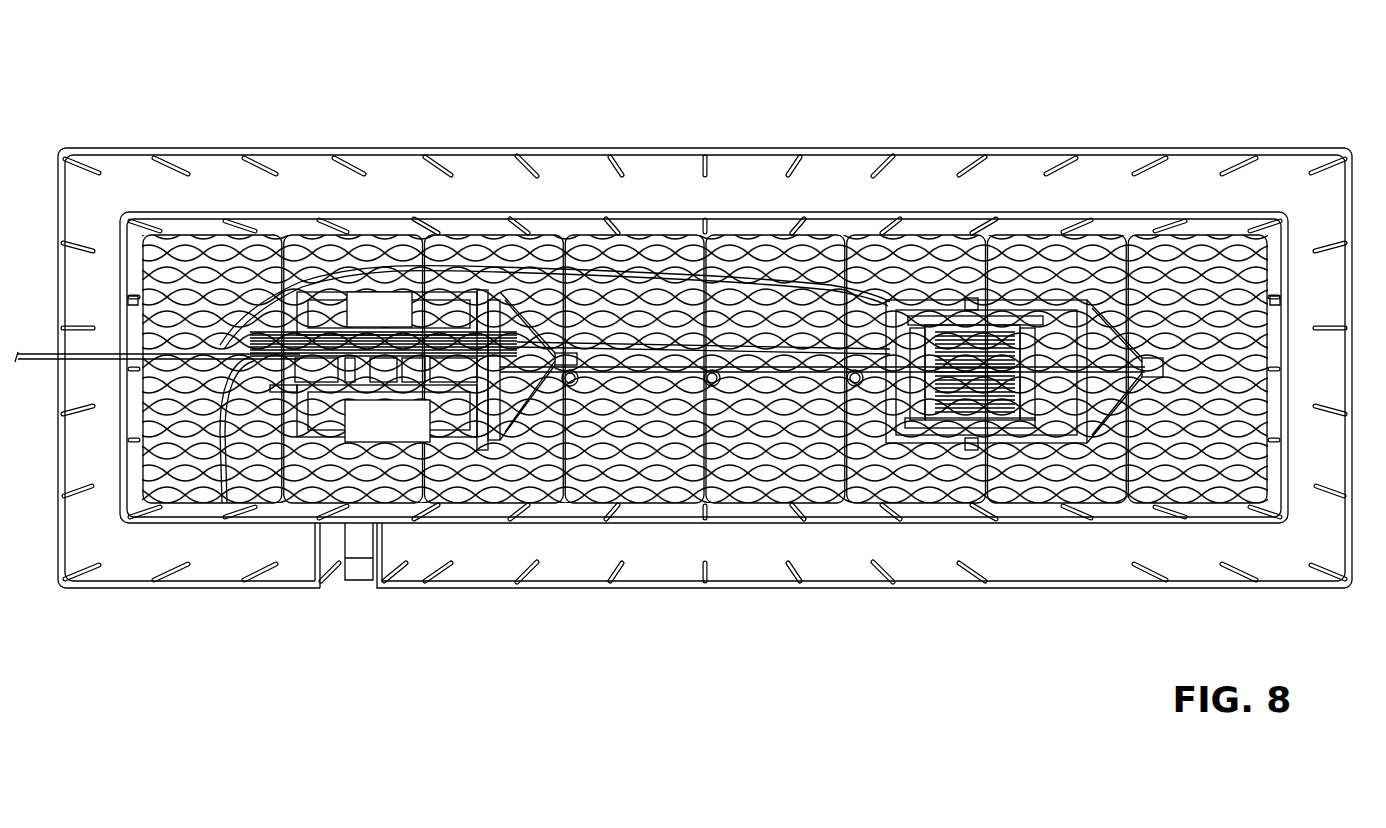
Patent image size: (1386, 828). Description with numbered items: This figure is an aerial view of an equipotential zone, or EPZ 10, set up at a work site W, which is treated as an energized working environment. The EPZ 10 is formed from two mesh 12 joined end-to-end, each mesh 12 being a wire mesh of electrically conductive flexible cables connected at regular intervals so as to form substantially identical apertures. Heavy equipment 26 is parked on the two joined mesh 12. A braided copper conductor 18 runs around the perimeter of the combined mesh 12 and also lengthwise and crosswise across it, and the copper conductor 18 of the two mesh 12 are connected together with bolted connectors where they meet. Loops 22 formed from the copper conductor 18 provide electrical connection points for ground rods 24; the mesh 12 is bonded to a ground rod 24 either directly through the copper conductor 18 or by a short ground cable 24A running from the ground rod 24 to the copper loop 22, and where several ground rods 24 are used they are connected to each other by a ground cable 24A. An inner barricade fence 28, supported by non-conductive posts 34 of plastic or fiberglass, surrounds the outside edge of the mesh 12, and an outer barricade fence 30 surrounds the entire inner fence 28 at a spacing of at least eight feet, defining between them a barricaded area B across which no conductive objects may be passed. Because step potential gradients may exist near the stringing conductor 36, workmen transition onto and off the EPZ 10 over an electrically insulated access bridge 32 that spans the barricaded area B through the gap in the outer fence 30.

The EPZ 10 is at (1272, 198).
The mesh 12 is at (665, 258).
The braided copper conductor 18 is at (145, 400).
The loop 22 is at (340, 419).
The ground rod 24 is at (895, 292).
The ground cable 24A is at (613, 273).
The heavy equipment 26 is at (480, 292).
The inner barricade fence 28 is at (836, 212).
The outer barricade fence 30 is at (555, 147).
The electrically insulated access bridge 32 is at (350, 582).
The non-conductive post 34 is at (132, 298).
The stringing conductor 36 is at (34, 362).
The work site W is at (1155, 66).
The barricaded area B is at (998, 562).